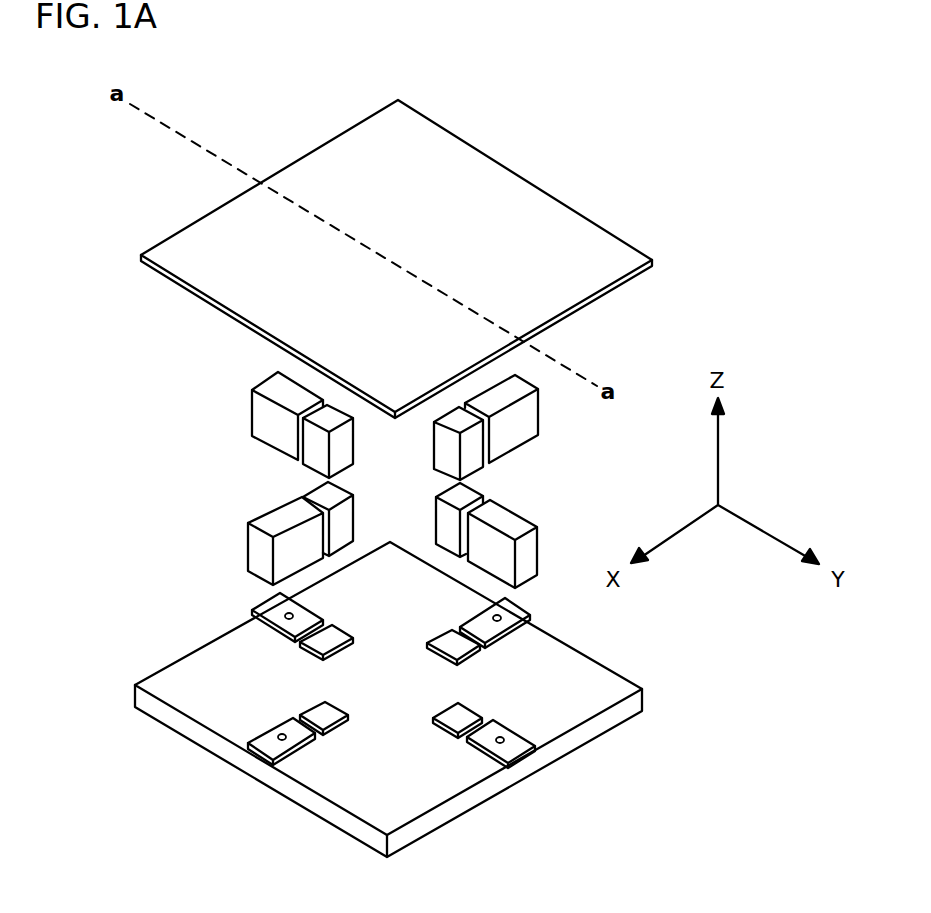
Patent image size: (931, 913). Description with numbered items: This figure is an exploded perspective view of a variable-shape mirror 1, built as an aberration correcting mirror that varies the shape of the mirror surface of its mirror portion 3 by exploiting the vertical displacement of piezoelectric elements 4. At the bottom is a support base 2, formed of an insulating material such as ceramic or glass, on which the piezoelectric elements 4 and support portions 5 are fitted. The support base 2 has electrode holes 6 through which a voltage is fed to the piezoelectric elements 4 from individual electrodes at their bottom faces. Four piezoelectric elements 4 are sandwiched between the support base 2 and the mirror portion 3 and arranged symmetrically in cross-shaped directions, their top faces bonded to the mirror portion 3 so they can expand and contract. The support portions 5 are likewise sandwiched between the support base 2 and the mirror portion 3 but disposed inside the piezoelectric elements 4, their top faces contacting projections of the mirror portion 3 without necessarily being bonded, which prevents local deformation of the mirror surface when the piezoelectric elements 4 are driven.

The variable-shape mirror 1 is at (716, 308).
The support base 2 is at (580, 714).
The mirror portion 3 is at (512, 192).
The piezoelectric elements 4 is at (257, 543).
The support portions 5 is at (445, 527).
The electrode holes 6 is at (289, 620).